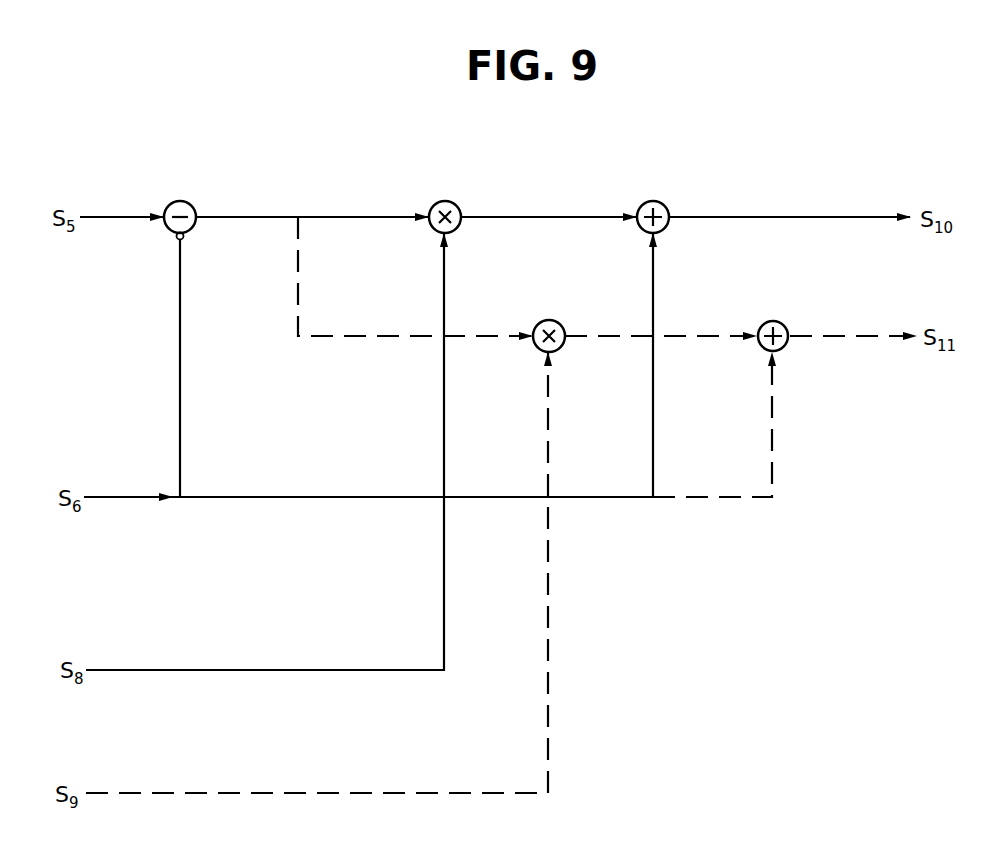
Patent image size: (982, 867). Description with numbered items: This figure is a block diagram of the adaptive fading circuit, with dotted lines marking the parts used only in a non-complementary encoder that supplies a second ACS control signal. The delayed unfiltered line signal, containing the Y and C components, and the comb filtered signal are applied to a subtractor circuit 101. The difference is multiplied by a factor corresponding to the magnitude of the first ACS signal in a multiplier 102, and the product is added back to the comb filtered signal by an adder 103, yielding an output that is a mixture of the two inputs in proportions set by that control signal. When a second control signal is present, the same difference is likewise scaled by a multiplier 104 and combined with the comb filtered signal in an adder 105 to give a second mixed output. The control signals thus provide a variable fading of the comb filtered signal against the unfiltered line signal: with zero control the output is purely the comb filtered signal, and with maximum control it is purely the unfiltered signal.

The subtractor circuit 101 is at (189, 201).
The multiplier 102 is at (449, 201).
The adder 103 is at (659, 201).
The multiplier 104 is at (554, 321).
The adder 105 is at (769, 321).